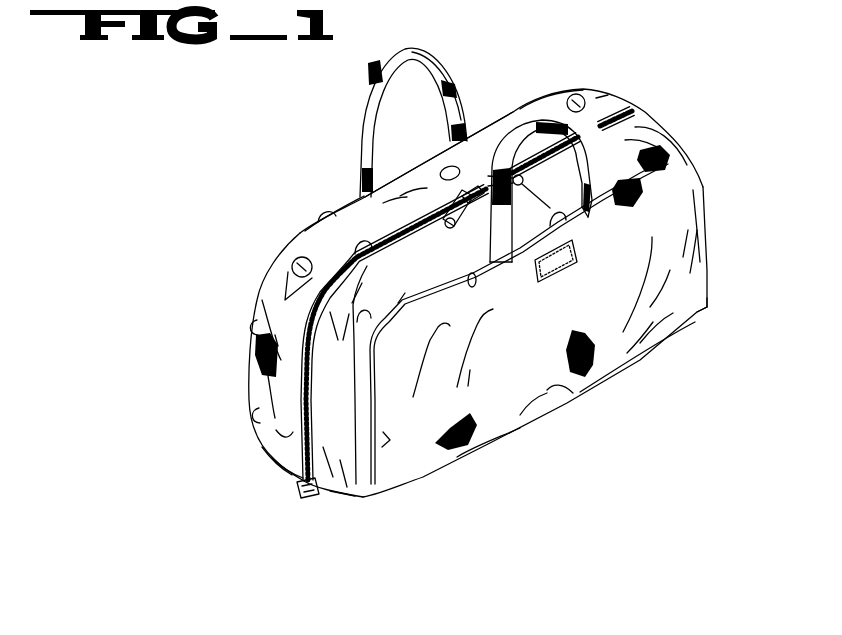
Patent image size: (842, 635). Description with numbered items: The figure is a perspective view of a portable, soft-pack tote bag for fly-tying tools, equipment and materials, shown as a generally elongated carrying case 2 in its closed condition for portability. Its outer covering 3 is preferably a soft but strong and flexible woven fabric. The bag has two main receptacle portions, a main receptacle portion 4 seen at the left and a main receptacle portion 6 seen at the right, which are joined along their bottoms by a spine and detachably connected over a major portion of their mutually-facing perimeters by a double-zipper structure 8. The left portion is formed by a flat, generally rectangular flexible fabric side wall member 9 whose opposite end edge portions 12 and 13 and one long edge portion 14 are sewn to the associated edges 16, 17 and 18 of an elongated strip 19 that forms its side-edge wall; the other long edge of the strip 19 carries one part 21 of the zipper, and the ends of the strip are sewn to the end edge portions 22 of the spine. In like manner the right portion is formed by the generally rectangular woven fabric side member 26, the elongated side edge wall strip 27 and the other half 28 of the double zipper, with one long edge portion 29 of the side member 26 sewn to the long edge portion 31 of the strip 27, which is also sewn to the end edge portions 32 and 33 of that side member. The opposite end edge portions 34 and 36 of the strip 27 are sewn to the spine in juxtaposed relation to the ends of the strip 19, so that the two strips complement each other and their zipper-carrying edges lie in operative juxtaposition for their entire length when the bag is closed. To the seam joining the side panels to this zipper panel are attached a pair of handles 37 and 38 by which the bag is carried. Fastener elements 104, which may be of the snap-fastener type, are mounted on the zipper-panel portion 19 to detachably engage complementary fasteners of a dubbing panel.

The carrying case 2 is at (277, 227).
The outer covering 3 is at (403, 468).
The main receptacle portion 4 is at (264, 469).
The main receptacle portion 6 is at (348, 508).
The double-zipper structure 8 is at (300, 481).
The side wall member 9 is at (334, 217).
The end edge portion 12 is at (243, 391).
The end edge portion 13 is at (560, 88).
The long edge portion 14 is at (413, 170).
The edge 16 is at (255, 326).
The edge 17 is at (361, 196).
The edge 18 is at (518, 108).
The elongated strip 19 is at (280, 308).
The zipper part 21 is at (370, 254).
The end edge portion 22 is at (287, 467).
The side member 26 is at (513, 340).
The side edge wall strip 27 is at (626, 143).
The zipper half 28 is at (309, 396).
The long edge portion 29 is at (567, 217).
The long edge portion 31 is at (470, 272).
The end edge portion 32 is at (373, 410).
The end edge portion 33 is at (706, 197).
The end edge portion 34 is at (337, 492).
The end edge portion 36 is at (711, 310).
The handle 37 is at (363, 106).
The handle 38 is at (524, 181).
The fastener elements 104 is at (292, 266).